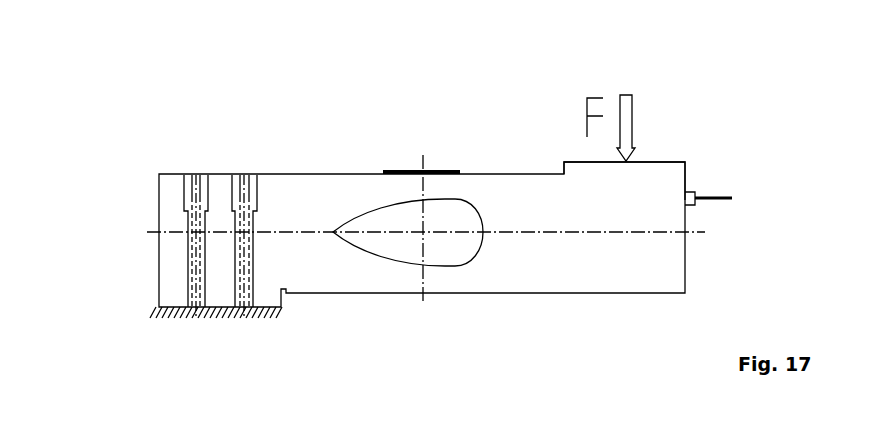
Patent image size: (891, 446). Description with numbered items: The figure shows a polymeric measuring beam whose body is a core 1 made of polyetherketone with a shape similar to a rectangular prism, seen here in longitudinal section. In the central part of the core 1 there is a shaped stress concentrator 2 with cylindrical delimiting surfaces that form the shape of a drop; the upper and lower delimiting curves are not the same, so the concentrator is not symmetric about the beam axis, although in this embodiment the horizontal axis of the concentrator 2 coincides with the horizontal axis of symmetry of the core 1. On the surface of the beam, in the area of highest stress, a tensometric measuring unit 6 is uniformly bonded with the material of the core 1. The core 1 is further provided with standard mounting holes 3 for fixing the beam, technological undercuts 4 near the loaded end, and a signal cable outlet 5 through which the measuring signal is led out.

The core 1 is at (167, 292).
The stress concentrator 2 is at (452, 265).
The mounting holes 3 is at (193, 272).
The technological undercuts 4 is at (562, 177).
The signal cable outlet 5 is at (732, 196).
The tensometric measuring unit 6 is at (388, 171).